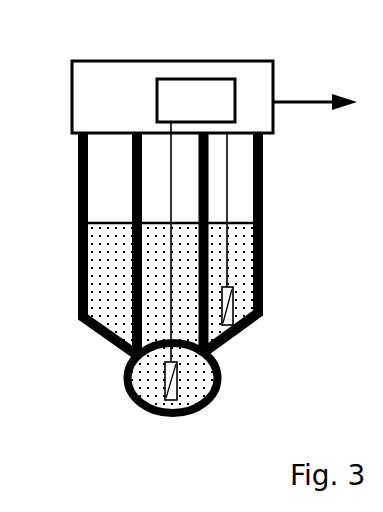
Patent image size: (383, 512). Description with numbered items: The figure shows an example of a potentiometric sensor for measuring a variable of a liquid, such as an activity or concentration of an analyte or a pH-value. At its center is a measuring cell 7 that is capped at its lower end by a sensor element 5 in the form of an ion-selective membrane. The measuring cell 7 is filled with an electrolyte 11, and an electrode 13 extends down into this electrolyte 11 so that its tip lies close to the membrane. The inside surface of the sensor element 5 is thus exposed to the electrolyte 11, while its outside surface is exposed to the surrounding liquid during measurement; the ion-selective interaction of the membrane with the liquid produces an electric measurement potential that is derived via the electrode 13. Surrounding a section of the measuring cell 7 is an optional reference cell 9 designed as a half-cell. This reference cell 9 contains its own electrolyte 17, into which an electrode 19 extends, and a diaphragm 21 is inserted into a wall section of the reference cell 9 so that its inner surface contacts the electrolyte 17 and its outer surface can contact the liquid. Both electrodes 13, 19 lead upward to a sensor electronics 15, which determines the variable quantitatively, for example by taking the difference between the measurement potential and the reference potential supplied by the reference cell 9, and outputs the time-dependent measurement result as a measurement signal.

The sensor element 5 is at (192, 407).
The measuring cell 7 is at (148, 278).
The reference cell 9 is at (237, 222).
The electrolyte 11 is at (169, 325).
The electrode 13 is at (165, 378).
The sensor electronics 15 is at (209, 109).
The electrolyte 17 is at (124, 288).
The electrode 19 is at (228, 313).
The diaphragm 21 is at (238, 338).